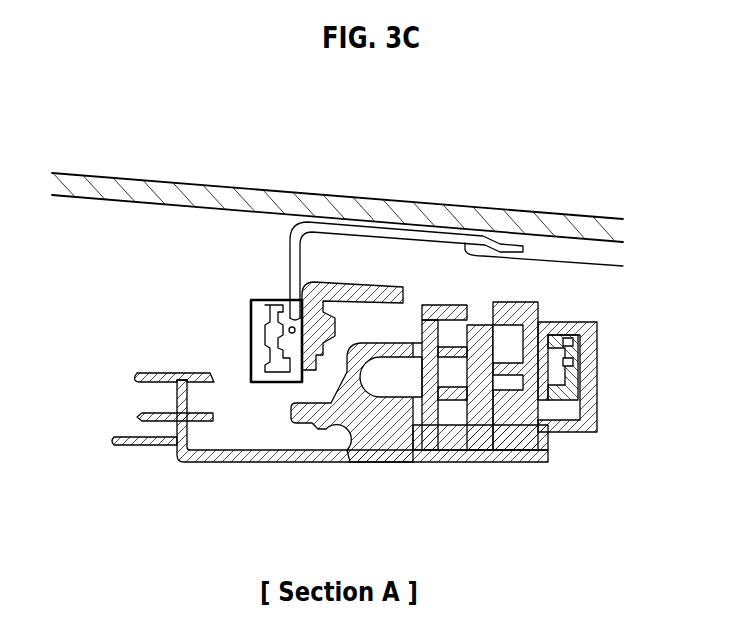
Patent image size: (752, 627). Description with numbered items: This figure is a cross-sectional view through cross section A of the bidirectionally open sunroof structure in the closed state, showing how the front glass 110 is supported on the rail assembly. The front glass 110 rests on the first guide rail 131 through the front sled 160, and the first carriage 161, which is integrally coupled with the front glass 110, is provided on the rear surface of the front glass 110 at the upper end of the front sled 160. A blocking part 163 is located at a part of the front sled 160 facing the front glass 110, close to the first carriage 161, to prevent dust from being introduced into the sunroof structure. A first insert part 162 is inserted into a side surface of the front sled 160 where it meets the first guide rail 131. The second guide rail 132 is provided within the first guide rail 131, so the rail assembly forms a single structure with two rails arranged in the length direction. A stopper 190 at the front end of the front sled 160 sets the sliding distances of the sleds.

The front glass 110 is at (217, 194).
The blocking part 163 is at (410, 235).
The first carriage 161 is at (407, 293).
The stopper 190 is at (251, 314).
The first insert part 162 is at (578, 341).
The first guide rail 131 is at (450, 453).
The second guide rail 132 is at (257, 462).
The front sled 160 is at (525, 440).